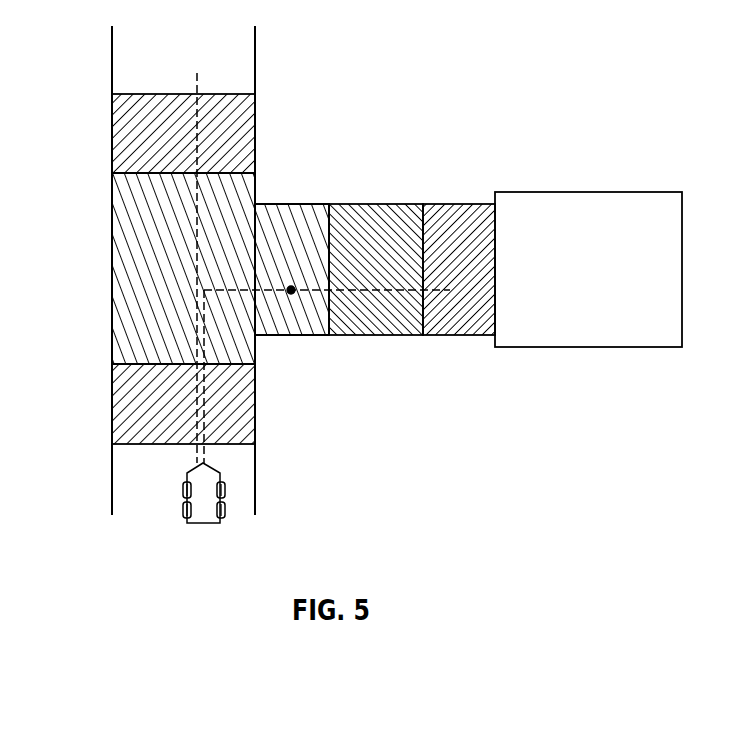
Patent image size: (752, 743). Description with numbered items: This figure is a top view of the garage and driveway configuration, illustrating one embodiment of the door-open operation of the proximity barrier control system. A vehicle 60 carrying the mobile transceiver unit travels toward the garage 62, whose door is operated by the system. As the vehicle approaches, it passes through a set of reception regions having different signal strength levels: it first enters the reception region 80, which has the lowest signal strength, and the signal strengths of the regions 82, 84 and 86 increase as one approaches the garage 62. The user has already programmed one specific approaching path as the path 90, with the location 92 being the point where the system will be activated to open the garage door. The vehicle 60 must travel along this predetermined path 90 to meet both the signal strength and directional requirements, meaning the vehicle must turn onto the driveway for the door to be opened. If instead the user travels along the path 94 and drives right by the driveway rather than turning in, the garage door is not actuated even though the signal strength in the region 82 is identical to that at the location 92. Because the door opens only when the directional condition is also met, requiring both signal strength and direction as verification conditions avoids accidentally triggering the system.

The vehicle 60 is at (197, 524).
The garage 62 is at (580, 190).
The reception region 80 is at (123, 398).
The reception region 82 is at (125, 210).
The reception region 84 is at (366, 205).
The reception region 86 is at (463, 205).
The path 90 is at (202, 346).
The location 92 is at (291, 293).
The path 94 is at (195, 133).